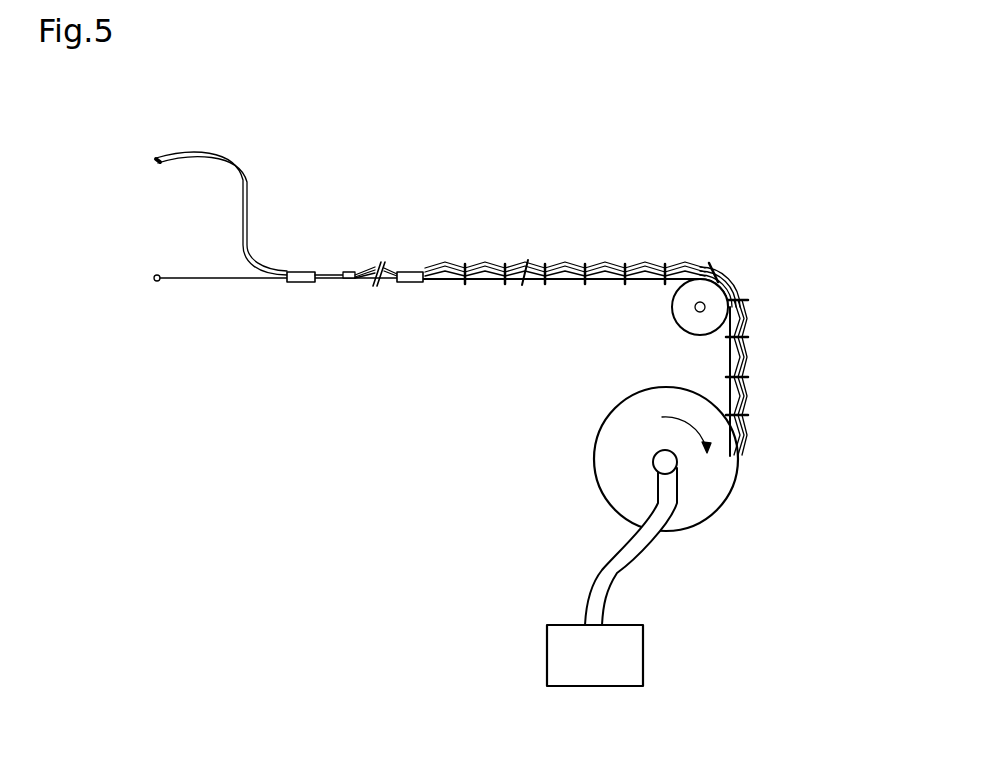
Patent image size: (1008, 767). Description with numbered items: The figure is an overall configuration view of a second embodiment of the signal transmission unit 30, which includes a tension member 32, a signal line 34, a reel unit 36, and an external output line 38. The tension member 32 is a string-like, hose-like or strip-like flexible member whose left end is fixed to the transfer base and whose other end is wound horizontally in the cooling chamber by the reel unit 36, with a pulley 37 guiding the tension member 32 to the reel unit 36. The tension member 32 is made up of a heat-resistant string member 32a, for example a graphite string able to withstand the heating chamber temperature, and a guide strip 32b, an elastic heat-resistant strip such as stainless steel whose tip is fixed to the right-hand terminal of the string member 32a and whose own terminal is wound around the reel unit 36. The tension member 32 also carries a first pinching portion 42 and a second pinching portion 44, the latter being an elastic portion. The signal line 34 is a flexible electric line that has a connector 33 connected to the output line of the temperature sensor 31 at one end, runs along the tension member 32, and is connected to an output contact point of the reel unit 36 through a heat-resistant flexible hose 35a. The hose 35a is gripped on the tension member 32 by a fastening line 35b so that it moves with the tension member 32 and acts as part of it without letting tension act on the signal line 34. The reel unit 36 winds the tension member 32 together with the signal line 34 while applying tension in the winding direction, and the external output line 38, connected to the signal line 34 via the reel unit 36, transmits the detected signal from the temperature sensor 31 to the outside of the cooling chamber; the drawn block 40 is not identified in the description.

The signal transmission unit 30 is at (656, 217).
The temperature sensor 31 is at (175, 152).
The tension member 32 is at (270, 292).
The heat-resistant string member 32a is at (213, 279).
The guide strip 32b is at (448, 280).
The connector 33 is at (349, 271).
The signal line 34 is at (396, 258).
The hose 35a is at (568, 265).
The fastening line 35b is at (542, 281).
The reel unit 36 is at (722, 482).
The pulley 37 is at (717, 295).
The external output line 38 is at (598, 587).
The motor 40 is at (596, 690).
The first pinching portion 42 is at (300, 282).
The second pinching portion 44 is at (408, 282).